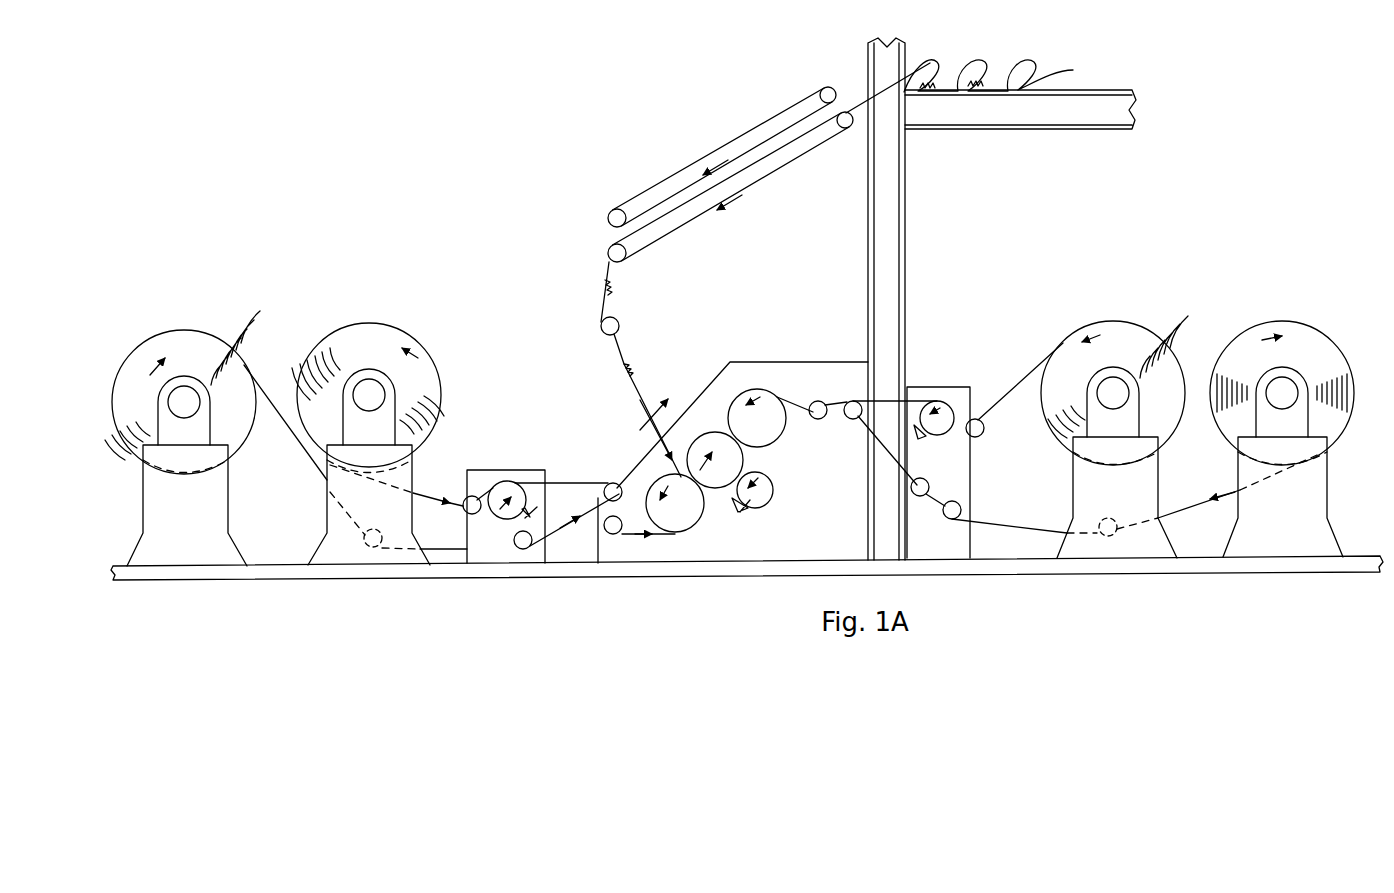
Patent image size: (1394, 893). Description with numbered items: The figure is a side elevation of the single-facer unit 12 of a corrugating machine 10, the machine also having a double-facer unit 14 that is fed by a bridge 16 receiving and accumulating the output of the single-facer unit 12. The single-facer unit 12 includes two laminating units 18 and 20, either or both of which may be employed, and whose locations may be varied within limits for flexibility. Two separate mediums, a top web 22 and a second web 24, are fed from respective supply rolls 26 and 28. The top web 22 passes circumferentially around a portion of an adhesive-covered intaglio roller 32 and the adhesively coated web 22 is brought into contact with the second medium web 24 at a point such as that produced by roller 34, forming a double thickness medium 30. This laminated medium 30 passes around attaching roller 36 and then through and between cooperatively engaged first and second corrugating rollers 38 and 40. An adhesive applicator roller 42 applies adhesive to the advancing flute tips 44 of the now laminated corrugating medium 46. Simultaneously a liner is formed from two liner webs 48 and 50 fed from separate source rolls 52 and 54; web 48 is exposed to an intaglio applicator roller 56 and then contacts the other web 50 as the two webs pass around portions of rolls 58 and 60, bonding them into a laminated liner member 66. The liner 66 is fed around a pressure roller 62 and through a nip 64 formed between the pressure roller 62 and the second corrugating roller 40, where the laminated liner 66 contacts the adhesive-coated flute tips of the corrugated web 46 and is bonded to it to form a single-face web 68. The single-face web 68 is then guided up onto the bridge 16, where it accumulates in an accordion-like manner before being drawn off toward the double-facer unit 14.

The corrugating machine 10 is at (422, 131).
The single-facer unit 12 is at (571, 328).
The double-facer unit 14 is at (886, 299).
The bridge 16 is at (1012, 134).
The laminating unit 18 is at (940, 370).
The laminating unit 20 is at (508, 457).
The top medium web 22 is at (1020, 383).
The second medium web 24 is at (1182, 505).
The supply roll 26 is at (1118, 318).
The supply roll 28 is at (1307, 315).
The double thickness medium 30 is at (827, 418).
The intaglio roller 32 is at (947, 428).
The roller 34 is at (851, 419).
The attaching roller 36 is at (813, 401).
The first corrugating roller 38 is at (780, 443).
The second corrugating roller 40 is at (712, 432).
The adhesive applicator roller 42 is at (746, 506).
The flute tips 44 is at (618, 294).
The laminated corrugating medium 46 is at (771, 468).
The liner web 48 is at (418, 490).
The liner web 50 is at (303, 458).
The source roll 52 is at (407, 335).
The source roll 54 is at (235, 335).
The intaglio applicator roller 56 is at (520, 490).
The roll 58 is at (616, 484).
The roll 60 is at (614, 534).
The pressure roller 62 is at (700, 522).
The nip 64 is at (676, 470).
The laminated liner member 66 is at (658, 534).
The single-face web 68 is at (617, 343).